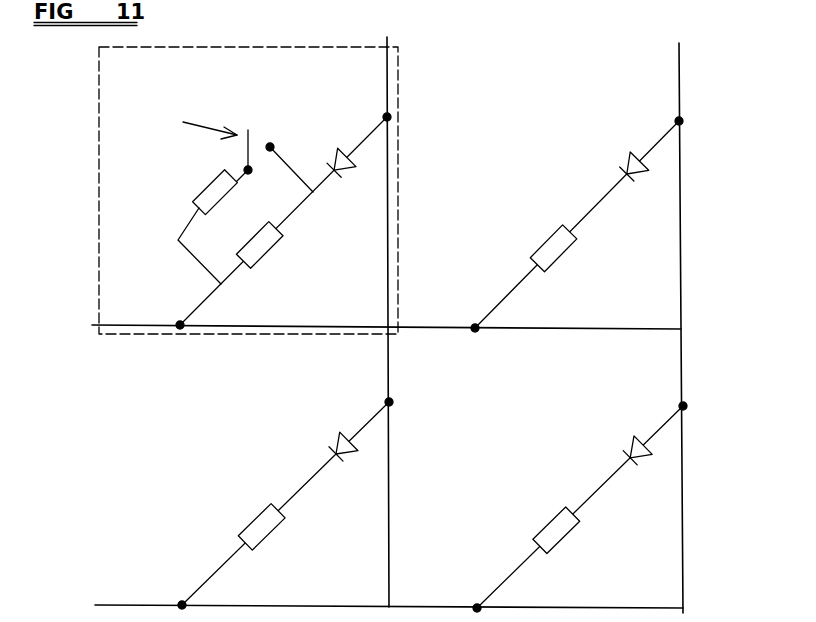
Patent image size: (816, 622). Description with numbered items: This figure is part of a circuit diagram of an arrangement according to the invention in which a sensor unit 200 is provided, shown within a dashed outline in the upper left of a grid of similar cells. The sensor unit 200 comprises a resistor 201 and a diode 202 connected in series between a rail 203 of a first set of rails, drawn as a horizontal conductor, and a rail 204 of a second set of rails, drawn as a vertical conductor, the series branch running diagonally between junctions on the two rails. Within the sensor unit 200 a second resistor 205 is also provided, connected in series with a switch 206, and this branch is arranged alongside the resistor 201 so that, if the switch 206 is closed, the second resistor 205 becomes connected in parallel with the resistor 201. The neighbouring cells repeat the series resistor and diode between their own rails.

The sensor unit 200 is at (96, 193).
The resistor 201 is at (279, 245).
The diode 202 is at (350, 174).
The rail of a first set of rails 203 is at (137, 326).
The rail of a second set of rails 204 is at (389, 355).
The second resistor 205 is at (206, 189).
The switch 206 is at (247, 140).